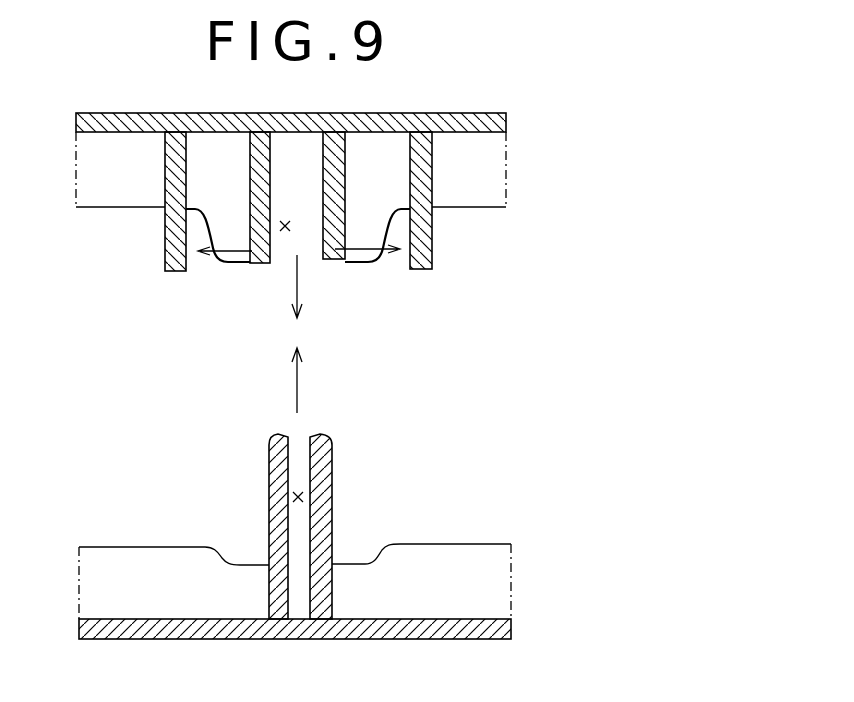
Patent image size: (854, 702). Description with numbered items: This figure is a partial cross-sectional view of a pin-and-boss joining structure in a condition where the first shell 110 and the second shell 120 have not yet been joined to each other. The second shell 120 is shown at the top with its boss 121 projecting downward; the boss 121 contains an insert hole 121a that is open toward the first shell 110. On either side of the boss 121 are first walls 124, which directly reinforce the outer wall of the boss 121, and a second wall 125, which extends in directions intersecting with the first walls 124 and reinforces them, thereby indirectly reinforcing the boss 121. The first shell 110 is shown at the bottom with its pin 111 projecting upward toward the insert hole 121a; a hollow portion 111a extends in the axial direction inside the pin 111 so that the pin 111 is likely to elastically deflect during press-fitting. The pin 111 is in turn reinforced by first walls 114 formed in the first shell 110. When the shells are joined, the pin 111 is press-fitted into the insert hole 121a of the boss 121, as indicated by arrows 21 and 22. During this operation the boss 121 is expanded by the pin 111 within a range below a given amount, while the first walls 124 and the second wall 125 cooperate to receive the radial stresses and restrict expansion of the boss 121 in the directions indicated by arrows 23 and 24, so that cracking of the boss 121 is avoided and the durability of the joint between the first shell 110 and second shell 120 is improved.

The second shell 120 is at (334, 230).
The boss 121 is at (338, 262).
The insert hole 121a is at (284, 230).
The first walls 124 is at (130, 198).
The second wall 125 is at (172, 252).
The arrow 23 is at (223, 266).
The arrow 24 is at (367, 265).
The arrow 21 is at (312, 286).
The arrow 22 is at (313, 380).
The first shell 110 is at (346, 525).
The pin 111 is at (344, 481).
The hollow portion 111a is at (298, 497).
The first walls 114 is at (167, 557).